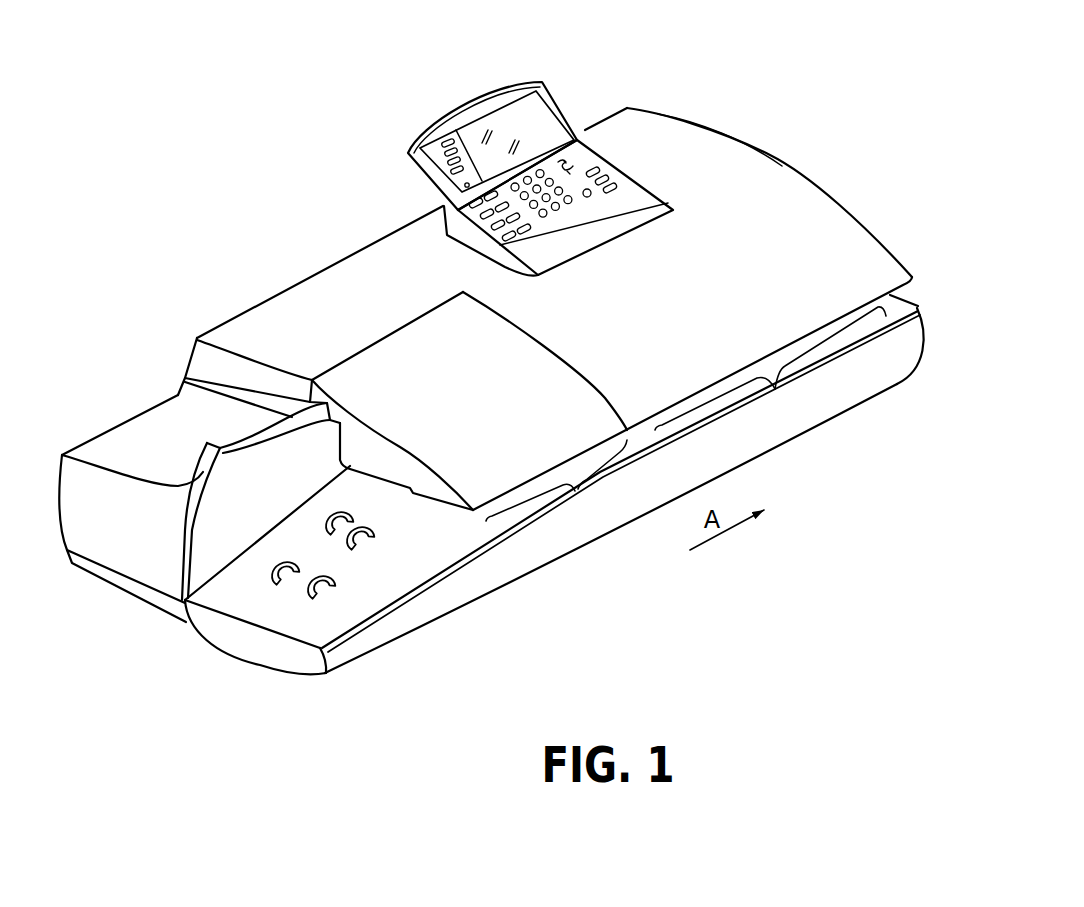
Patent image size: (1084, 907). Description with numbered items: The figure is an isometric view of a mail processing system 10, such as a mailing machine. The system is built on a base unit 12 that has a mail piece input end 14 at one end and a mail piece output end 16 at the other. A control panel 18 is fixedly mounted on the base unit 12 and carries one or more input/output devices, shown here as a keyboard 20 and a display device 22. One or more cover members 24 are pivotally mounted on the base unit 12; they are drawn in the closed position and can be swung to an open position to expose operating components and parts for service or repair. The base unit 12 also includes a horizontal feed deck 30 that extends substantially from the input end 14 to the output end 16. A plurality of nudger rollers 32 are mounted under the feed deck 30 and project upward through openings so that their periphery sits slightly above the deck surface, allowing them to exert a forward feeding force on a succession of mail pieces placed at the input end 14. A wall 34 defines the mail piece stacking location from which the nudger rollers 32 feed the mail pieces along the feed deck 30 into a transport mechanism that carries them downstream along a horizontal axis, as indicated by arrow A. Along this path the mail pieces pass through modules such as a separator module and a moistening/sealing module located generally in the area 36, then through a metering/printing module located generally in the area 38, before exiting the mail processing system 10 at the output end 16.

The mail processing system 10 is at (268, 233).
The base unit 12 is at (528, 545).
The mail piece input end 14 is at (312, 612).
The mail piece output end 16 is at (860, 183).
The control panel 18 is at (573, 92).
The keyboard 20 is at (503, 215).
The display device 22 is at (477, 135).
The cover members 24 is at (780, 173).
The horizontal feed deck 30 is at (458, 540).
The nudger rollers 32 is at (368, 528).
The wall 34 is at (222, 500).
The separator and moistening/sealing module area 36 is at (573, 489).
The metering/printing module area 38 is at (773, 387).